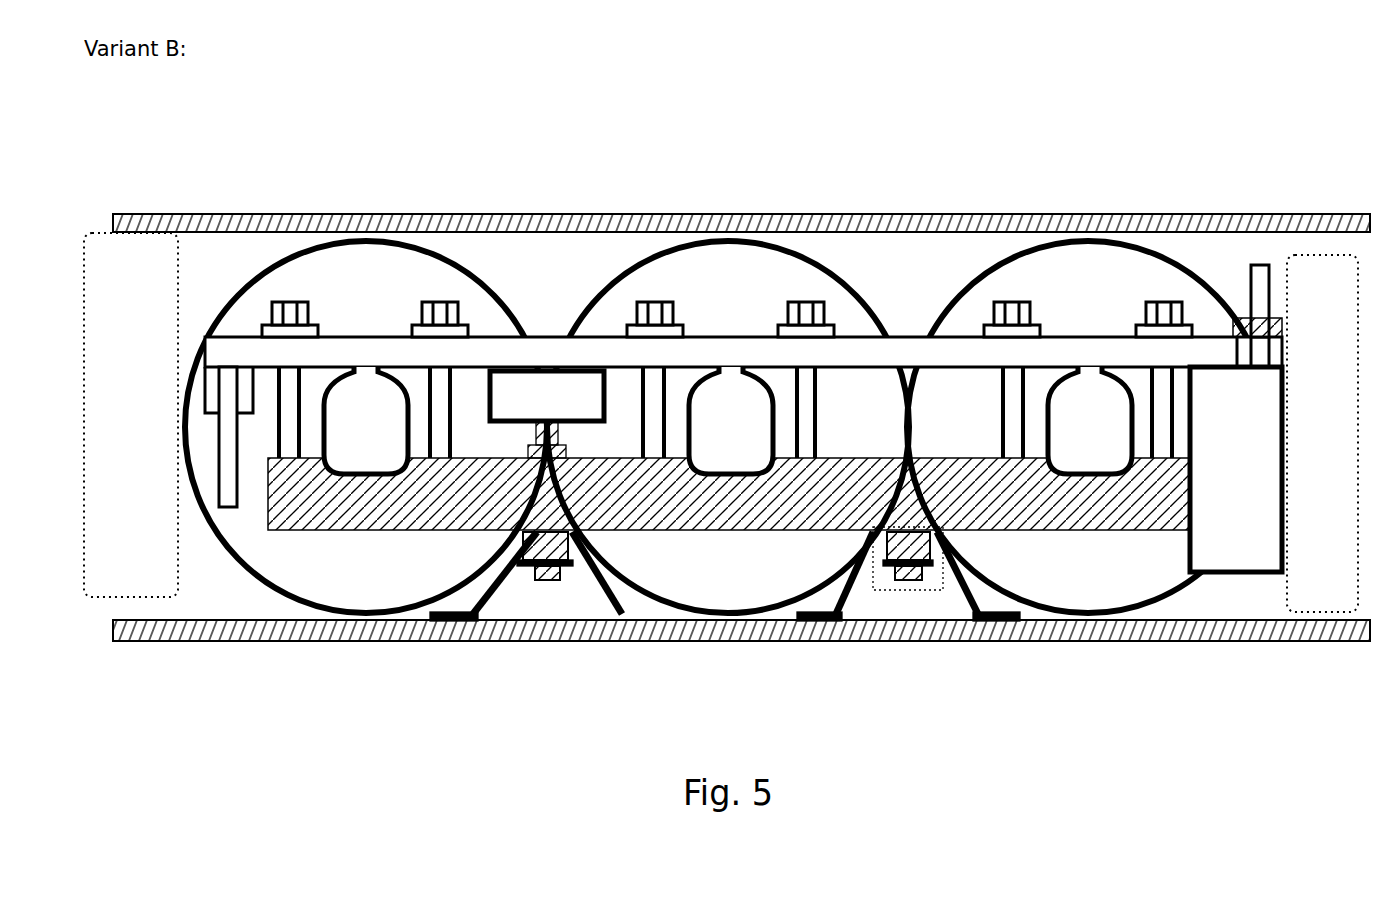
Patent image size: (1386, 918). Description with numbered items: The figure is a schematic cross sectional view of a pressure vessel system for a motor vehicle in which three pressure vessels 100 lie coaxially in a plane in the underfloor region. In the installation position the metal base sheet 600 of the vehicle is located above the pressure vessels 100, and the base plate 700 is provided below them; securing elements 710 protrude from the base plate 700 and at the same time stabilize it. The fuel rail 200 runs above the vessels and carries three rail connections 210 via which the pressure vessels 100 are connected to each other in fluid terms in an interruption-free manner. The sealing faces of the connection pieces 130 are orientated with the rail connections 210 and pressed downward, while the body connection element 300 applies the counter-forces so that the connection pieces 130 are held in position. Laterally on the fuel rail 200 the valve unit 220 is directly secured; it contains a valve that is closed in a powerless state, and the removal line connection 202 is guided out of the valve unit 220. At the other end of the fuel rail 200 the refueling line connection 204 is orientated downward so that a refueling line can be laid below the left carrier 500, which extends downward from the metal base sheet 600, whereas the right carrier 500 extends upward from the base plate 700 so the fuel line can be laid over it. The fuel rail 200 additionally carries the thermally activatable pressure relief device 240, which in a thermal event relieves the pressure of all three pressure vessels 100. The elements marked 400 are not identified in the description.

The pressure vessel 100 is at (343, 580).
The connection piece 130 is at (349, 438).
The fuel rail 200 is at (912, 350).
The removal line connection 202 is at (1270, 277).
The refueling line connection 204 is at (211, 514).
The rail connection 210 is at (366, 356).
The valve unit 220 is at (1219, 438).
The thermally activatable pressure relief device 240 is at (525, 409).
The body connection element 300 is at (633, 511).
The fixture 400 is at (296, 301).
The carrier 500 is at (116, 366).
The metal base sheet 600 is at (620, 216).
The base plate 700 is at (716, 642).
The securing element 710 is at (503, 578).